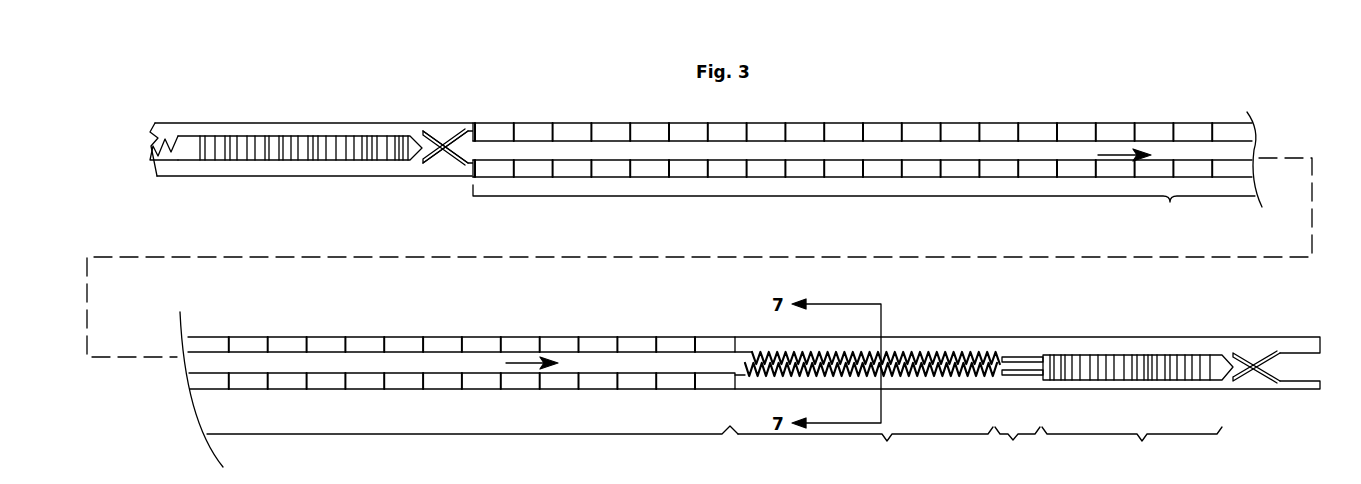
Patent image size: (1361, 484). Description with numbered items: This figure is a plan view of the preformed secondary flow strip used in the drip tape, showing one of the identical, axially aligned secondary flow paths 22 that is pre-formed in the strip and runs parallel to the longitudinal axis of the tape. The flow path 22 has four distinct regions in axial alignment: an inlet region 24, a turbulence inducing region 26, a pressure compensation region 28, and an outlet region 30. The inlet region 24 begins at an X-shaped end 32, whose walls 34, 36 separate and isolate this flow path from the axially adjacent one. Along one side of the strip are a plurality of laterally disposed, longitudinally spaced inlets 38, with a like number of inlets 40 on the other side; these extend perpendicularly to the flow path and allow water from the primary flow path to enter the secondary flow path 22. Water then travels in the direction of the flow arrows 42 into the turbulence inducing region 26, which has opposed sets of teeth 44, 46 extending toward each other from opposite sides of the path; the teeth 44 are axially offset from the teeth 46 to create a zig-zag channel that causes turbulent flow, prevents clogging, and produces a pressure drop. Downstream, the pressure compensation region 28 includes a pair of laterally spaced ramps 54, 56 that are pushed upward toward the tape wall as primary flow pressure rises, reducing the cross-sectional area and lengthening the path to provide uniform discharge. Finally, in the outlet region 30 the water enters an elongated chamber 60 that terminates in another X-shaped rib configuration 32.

The secondary flow path 22 is at (236, 115).
The inlet region 24 is at (864, 212).
The turbulence inducing region 26 is at (865, 449).
The pressure compensation region 28 is at (1017, 449).
The outlet region 30 is at (1132, 449).
The X-shaped end 32 is at (449, 115).
The wall 34 is at (460, 156).
The wall 36 is at (467, 132).
The inlets 38 is at (907, 136).
The inlets 40 is at (983, 176).
The flow arrows 42 is at (1117, 152).
The teeth 44 is at (925, 356).
The teeth 46 is at (965, 378).
The ramp 54 is at (1018, 357).
The ramp 56 is at (1020, 377).
The elongated chamber 60 is at (1080, 380).